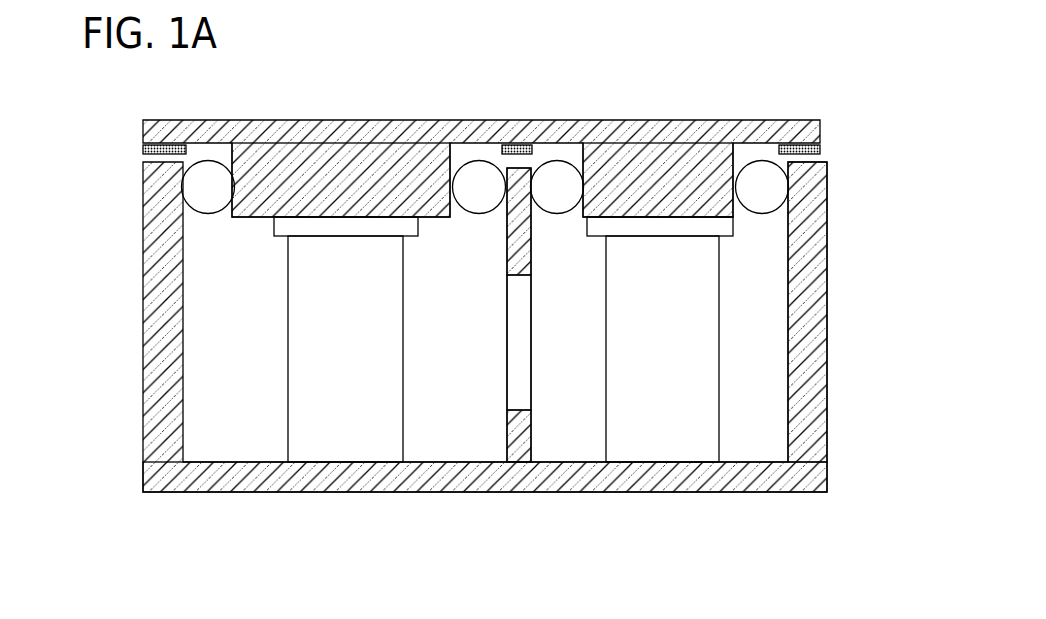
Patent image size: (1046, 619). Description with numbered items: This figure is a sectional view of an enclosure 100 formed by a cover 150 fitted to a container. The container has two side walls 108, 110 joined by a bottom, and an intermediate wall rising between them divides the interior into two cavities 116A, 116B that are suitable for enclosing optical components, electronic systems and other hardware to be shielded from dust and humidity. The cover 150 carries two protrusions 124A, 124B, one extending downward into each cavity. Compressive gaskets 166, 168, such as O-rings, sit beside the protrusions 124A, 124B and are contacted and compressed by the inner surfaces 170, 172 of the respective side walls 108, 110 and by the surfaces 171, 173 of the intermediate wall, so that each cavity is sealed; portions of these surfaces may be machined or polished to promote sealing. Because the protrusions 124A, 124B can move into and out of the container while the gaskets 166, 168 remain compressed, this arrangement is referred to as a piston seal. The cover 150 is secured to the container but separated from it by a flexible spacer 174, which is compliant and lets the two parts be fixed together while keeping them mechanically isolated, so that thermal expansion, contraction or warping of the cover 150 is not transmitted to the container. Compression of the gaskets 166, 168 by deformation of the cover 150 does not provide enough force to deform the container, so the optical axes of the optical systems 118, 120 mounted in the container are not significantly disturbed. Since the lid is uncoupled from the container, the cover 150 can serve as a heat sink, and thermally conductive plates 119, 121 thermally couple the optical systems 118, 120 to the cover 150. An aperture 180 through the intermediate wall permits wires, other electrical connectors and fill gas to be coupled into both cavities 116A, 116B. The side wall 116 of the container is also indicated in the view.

The enclosure 100 is at (100, 445).
The side wall 108 is at (145, 280).
The side wall 110 is at (827, 407).
The sidewall 116 is at (827, 307).
The cavity 116A is at (273, 445).
The cavity 116B is at (777, 436).
The optical system 118 is at (366, 408).
The thermally conductive plate 119 is at (323, 237).
The optical system 120 is at (674, 391).
The thermally conductive plate 121 is at (650, 237).
The protrusion 124A is at (365, 198).
The protrusion 124B is at (675, 198).
The cover 150 is at (710, 120).
The compressive gasket 166 is at (202, 206).
The compressive gasket 168 is at (543, 214).
The inner surface 170 is at (183, 305).
The surface 171 is at (505, 215).
The inner surface 172 is at (788, 305).
The surface 173 is at (531, 222).
The flexible spacer 174 is at (822, 143).
The aperture 180 is at (508, 342).